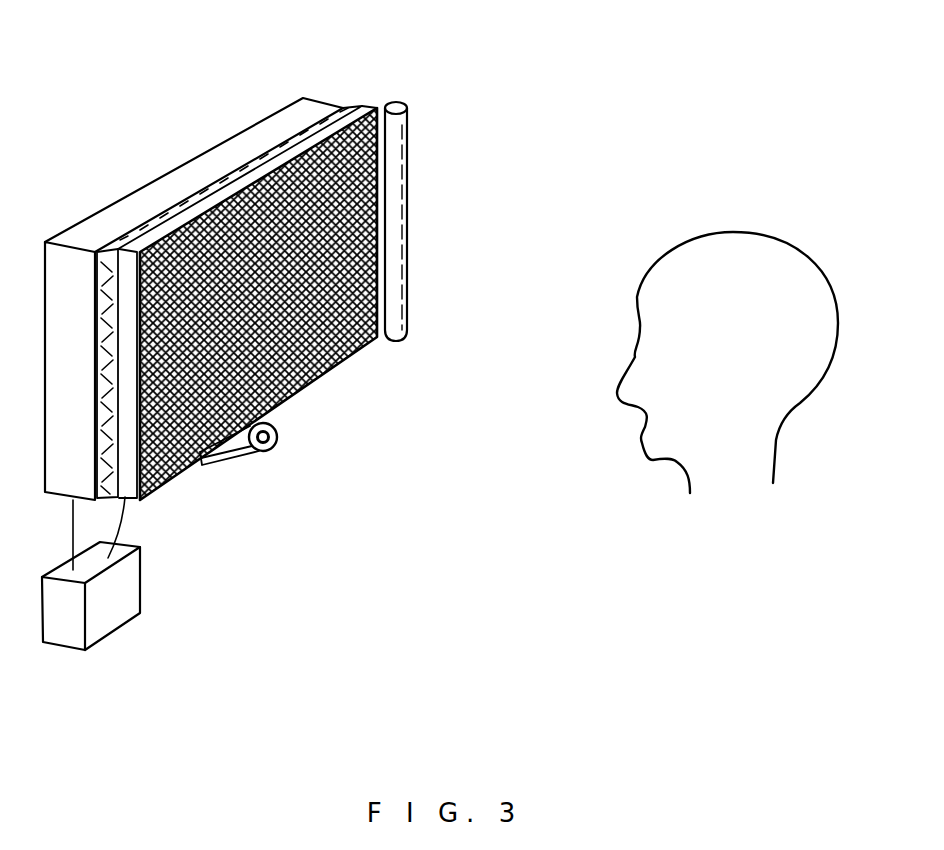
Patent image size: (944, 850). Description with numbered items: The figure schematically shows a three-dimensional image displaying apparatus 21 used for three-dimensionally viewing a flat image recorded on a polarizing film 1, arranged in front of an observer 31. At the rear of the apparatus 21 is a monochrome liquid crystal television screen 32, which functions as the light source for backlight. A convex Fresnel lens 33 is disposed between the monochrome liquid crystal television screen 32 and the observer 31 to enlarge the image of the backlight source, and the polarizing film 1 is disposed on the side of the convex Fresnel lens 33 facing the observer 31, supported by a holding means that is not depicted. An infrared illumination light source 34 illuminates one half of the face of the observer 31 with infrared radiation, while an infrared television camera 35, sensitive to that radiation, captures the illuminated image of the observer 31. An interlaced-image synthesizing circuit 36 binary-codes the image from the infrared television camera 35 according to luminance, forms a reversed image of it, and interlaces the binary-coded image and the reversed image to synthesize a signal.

The apparatus 21 is at (118, 180).
The monochrome liquid crystal television screen 32 is at (218, 157).
The convex Fresnel lens 33 is at (352, 107).
The polarizing film 1 is at (165, 483).
The infrared television camera 35 is at (260, 452).
The infrared illumination light source 34 is at (408, 213).
The interlaced-image synthesizing circuit 36 is at (115, 608).
The observer 31 is at (707, 257).